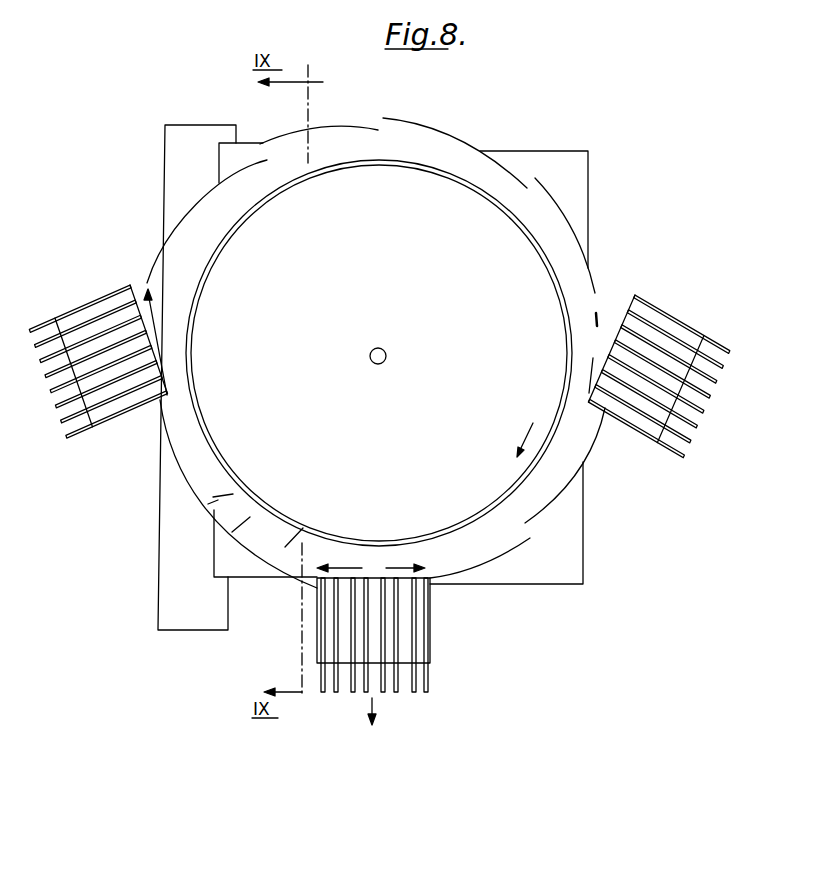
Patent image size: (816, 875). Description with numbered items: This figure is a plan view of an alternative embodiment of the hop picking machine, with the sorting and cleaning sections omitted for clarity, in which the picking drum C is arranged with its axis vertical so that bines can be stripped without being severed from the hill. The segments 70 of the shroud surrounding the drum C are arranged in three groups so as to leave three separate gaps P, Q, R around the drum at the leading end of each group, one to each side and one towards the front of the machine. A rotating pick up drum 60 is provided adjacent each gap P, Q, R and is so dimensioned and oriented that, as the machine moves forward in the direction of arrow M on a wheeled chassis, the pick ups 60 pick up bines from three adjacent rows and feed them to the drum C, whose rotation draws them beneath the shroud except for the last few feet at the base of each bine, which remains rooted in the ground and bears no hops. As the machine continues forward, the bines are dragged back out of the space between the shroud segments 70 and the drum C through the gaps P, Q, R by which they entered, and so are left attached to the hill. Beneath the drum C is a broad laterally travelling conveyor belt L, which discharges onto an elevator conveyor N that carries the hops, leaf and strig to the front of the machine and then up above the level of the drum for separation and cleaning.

The rotating pick up drum 60 is at (669, 314).
The segments of the shroud 70 is at (467, 142).
The picking drum C is at (442, 535).
The conveyor belt L is at (557, 572).
The elevator conveyor N is at (177, 620).
The gap P is at (153, 309).
The gap Q is at (596, 347).
The gap R is at (371, 568).
The arrow indicating forward movement of the machine M is at (370, 724).